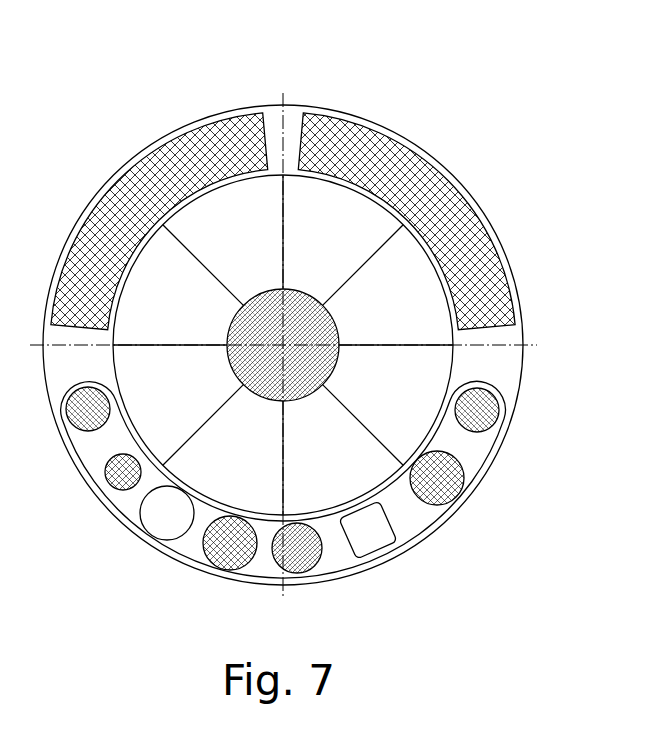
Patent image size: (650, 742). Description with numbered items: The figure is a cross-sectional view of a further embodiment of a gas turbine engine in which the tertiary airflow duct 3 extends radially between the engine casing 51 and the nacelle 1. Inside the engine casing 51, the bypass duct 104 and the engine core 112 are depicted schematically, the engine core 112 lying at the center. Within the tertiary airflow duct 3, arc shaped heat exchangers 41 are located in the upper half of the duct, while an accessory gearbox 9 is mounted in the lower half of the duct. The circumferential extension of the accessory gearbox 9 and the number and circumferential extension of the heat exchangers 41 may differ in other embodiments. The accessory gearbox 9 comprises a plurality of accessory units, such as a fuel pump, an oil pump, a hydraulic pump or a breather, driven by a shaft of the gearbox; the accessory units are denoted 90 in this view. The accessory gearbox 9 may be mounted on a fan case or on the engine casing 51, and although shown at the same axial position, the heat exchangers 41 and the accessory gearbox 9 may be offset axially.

The nacelle 1 is at (492, 218).
The tertiary airflow duct 3 is at (295, 113).
The heat exchangers 41 is at (430, 182).
The bypass duct 104 is at (342, 244).
The engine casing 51 is at (432, 255).
The engine core 112 is at (340, 357).
The cooling channel 90 is at (208, 565).
The accessory gearbox 9 is at (333, 557).